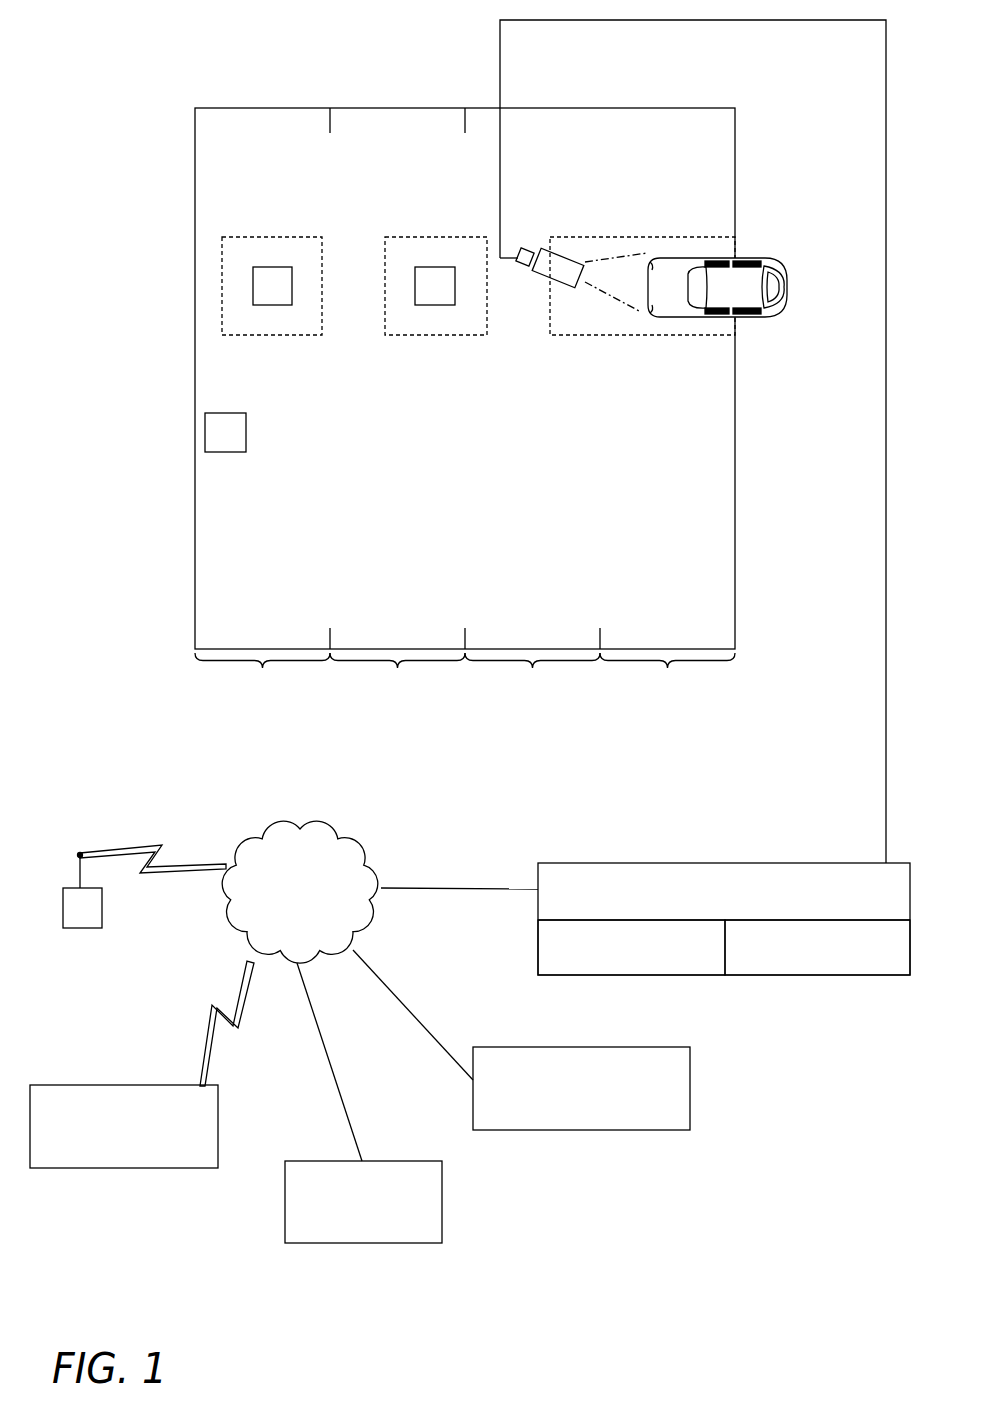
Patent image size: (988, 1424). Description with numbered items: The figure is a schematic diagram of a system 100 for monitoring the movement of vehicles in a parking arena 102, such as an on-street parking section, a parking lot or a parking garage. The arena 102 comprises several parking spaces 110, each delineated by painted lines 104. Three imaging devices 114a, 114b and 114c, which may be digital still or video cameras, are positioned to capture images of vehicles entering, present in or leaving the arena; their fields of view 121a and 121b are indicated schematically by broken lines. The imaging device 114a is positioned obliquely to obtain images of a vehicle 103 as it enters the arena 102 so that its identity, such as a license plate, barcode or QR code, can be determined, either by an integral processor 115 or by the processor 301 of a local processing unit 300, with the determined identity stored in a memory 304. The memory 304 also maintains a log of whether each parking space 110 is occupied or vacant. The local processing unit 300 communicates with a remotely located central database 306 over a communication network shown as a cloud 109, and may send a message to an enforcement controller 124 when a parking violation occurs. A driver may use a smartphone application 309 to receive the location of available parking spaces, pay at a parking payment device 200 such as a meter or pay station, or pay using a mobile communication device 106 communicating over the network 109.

The system 100 is at (140, 57).
The parking arena 102 is at (736, 530).
The vehicle 103 is at (788, 285).
The painted lines 104 is at (333, 640).
The mobile communication device 106 is at (80, 930).
The communication network 109 is at (369, 991).
The parking space 110 is at (465, 676).
The imaging device 114a is at (565, 255).
The imaging device 114b is at (433, 267).
The imaging device 114c is at (278, 267).
The integral processor 115 is at (523, 247).
The field of view 121a is at (283, 337).
The field of view 121b is at (437, 337).
The enforcement controller 124 is at (578, 1132).
The parking payment device 200 is at (205, 432).
The local processing unit 300 is at (637, 863).
The processor 301 is at (630, 975).
The memory 304 is at (810, 975).
The central database 306 is at (360, 1244).
The smartphone application 309 is at (120, 1170).